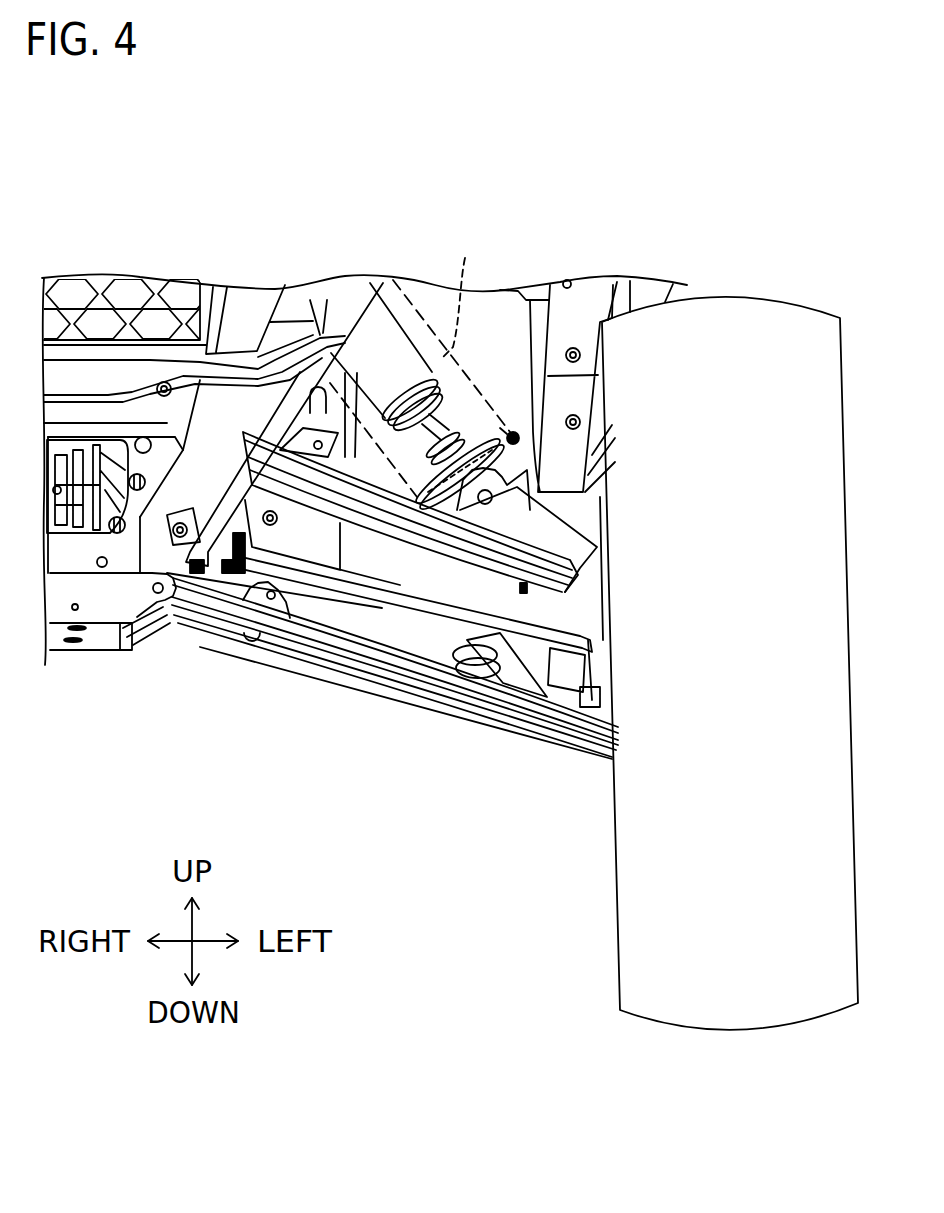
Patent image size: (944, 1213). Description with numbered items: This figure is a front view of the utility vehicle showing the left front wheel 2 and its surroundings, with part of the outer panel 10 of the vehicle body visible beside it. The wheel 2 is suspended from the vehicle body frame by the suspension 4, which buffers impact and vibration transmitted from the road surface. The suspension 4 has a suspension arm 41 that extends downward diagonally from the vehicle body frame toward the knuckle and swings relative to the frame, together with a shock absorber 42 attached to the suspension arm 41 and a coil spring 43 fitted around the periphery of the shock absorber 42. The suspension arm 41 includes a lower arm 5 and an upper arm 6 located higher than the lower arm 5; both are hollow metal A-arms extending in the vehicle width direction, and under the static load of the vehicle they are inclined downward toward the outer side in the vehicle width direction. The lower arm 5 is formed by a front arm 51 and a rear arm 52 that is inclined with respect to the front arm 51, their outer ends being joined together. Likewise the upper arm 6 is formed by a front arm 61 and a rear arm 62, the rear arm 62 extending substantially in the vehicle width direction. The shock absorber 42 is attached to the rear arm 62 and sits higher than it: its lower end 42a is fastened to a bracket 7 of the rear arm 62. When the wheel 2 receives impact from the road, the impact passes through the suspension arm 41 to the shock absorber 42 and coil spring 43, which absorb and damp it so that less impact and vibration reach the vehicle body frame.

The wheel 2 is at (722, 298).
The suspension 4 is at (427, 290).
The shock absorber 42 is at (405, 300).
The coil spring 43 is at (465, 289).
The lower end 42a is at (490, 468).
The bracket 7 is at (573, 520).
The outer panel 10 is at (107, 627).
The lower arm 5 is at (267, 665).
The upper arm 6 is at (364, 551).
The suspension arm 41 is at (370, 659).
The front arm 61 is at (437, 547).
The rear arm 62 is at (428, 548).
The front arm 51 is at (505, 718).
The rear arm 52 is at (455, 718).